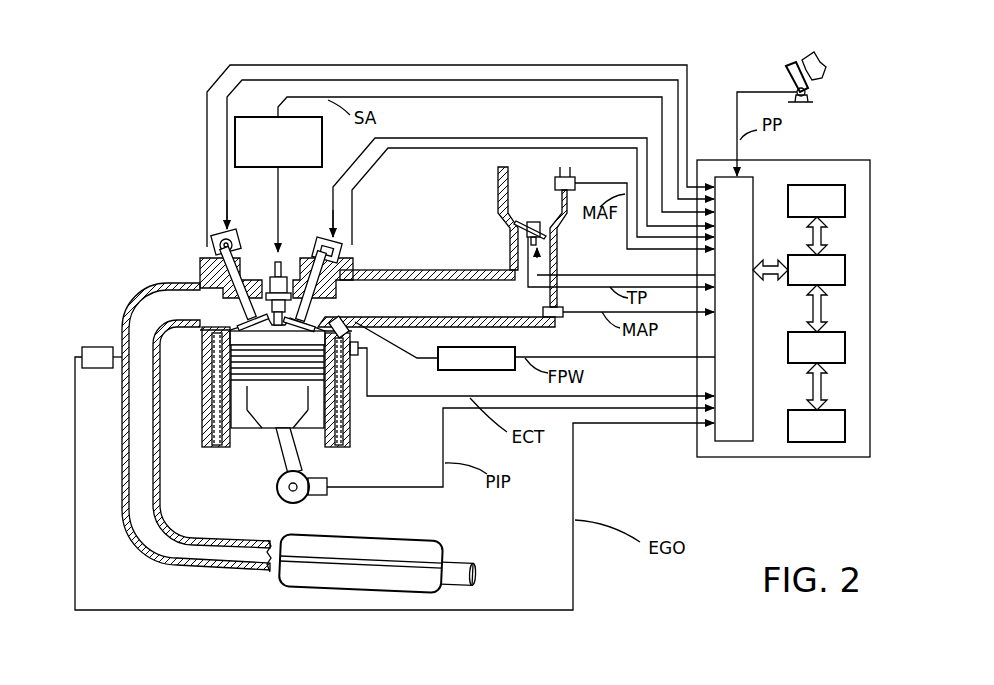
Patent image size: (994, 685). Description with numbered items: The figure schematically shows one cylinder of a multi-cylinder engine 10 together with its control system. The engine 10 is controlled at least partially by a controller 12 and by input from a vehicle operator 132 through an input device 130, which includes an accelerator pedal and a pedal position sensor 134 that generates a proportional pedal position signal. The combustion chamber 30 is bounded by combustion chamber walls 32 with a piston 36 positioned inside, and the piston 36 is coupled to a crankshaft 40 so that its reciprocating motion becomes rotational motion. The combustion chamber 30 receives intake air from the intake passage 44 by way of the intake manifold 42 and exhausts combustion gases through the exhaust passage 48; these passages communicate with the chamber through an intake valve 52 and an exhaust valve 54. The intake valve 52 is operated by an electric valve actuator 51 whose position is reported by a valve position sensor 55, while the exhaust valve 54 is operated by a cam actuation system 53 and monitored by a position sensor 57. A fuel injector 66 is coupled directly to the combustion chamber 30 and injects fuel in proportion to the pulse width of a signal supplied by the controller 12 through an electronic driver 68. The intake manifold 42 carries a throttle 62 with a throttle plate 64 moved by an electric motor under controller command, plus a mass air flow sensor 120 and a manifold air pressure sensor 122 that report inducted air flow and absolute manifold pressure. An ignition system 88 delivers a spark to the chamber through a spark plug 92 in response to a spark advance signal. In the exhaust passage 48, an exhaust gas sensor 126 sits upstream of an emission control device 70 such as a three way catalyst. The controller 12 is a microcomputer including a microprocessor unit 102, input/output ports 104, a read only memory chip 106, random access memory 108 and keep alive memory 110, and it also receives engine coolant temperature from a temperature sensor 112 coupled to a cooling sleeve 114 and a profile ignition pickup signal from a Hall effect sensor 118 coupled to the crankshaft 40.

The engine 10 is at (150, 220).
The controller 12 is at (863, 160).
The combustion chamber 30 is at (275, 340).
The combustion chamber walls 32 is at (228, 448).
The piston 36 is at (262, 410).
The crankshaft 40 is at (280, 498).
The intake manifold 42 is at (532, 237).
The intake passage 44 is at (436, 298).
The exhaust passage 48 is at (196, 427).
The electric valve actuator 51 is at (322, 240).
The intake valve 52 is at (310, 306).
The cam actuation system 53 is at (232, 232).
The exhaust valve 54 is at (238, 315).
The valve position sensor 55 is at (340, 249).
The position sensor 57 is at (215, 242).
The throttle 62 is at (548, 232).
The throttle plate 64 is at (518, 229).
The fuel injector 66 is at (360, 346).
The electronic driver 68 is at (452, 371).
The emission control device 70 is at (410, 536).
The ignition system 88 is at (245, 117).
The spark plug 92 is at (282, 262).
The microprocessor unit 102 is at (847, 268).
The input/output ports 104 is at (753, 183).
The read only memory chip 106 is at (847, 198).
The random access memory 108 is at (847, 345).
The keep alive memory 110 is at (847, 424).
The temperature sensor 112 is at (367, 357).
The cooling sleeve 114 is at (338, 407).
The Hall effect sensor 118 is at (320, 497).
The mass air flow sensor 120 is at (573, 177).
The manifold air pressure sensor 122 is at (560, 318).
The exhaust gas sensor 126 is at (80, 352).
The input device 130 is at (785, 76).
The vehicle operator 132 is at (825, 62).
The pedal position sensor 134 is at (810, 93).